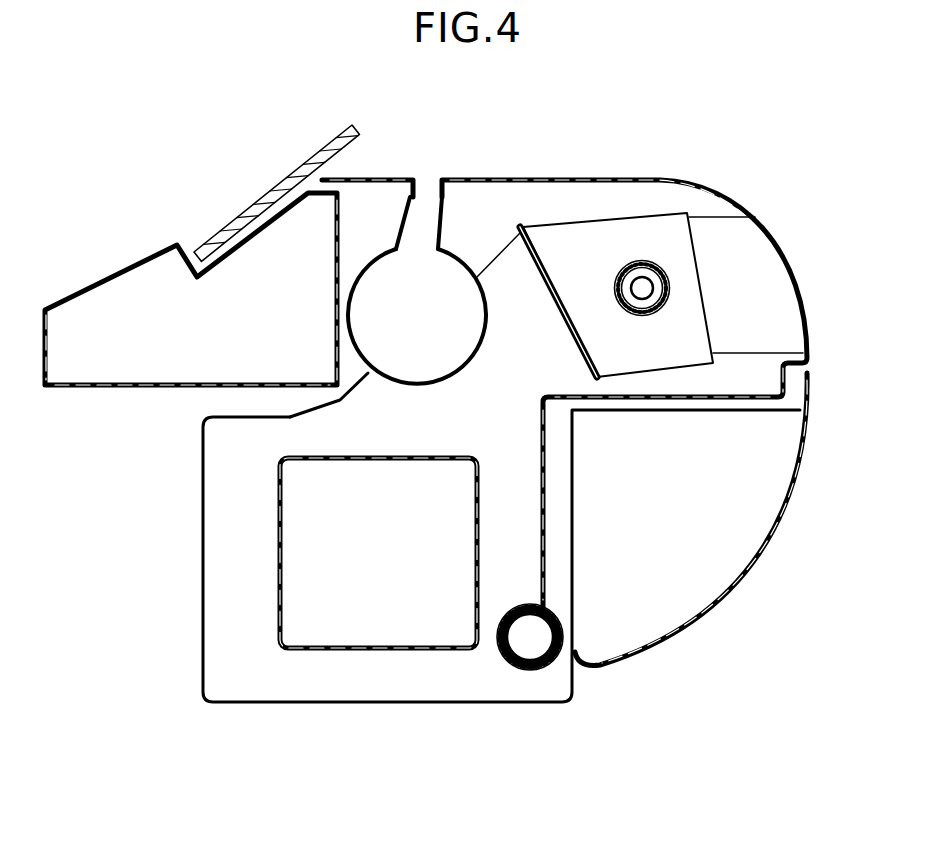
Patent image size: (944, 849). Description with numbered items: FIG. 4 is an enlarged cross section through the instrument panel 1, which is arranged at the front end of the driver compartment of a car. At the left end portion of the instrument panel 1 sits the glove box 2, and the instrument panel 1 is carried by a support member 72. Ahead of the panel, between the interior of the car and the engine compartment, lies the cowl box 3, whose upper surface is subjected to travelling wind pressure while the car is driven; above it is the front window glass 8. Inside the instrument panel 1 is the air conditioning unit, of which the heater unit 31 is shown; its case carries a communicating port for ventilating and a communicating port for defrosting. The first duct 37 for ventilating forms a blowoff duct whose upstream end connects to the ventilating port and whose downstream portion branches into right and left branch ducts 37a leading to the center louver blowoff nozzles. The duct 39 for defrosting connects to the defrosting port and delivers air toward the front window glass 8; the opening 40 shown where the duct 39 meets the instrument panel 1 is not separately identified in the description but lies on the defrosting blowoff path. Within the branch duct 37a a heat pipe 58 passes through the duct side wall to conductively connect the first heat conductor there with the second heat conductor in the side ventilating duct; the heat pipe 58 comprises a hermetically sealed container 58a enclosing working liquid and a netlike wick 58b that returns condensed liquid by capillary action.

The instrument panel 1 is at (687, 178).
The glove box 2 is at (768, 543).
The cowl box 3 is at (118, 367).
The front window glass 8 is at (307, 160).
The heater unit 31 is at (360, 702).
The first duct for ventilating 37 is at (605, 220).
The branch duct 37a is at (713, 217).
The duct for defrosting 39 is at (477, 358).
The chute 40 is at (427, 198).
The heat pipe 58 is at (670, 275).
The container 58a is at (640, 262).
The netlike wick 58b is at (633, 312).
The support member 72 is at (520, 663).